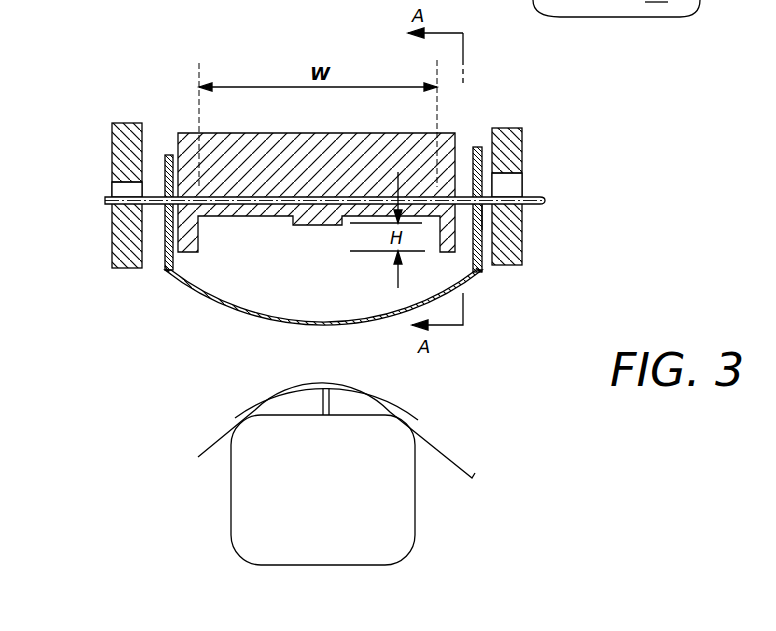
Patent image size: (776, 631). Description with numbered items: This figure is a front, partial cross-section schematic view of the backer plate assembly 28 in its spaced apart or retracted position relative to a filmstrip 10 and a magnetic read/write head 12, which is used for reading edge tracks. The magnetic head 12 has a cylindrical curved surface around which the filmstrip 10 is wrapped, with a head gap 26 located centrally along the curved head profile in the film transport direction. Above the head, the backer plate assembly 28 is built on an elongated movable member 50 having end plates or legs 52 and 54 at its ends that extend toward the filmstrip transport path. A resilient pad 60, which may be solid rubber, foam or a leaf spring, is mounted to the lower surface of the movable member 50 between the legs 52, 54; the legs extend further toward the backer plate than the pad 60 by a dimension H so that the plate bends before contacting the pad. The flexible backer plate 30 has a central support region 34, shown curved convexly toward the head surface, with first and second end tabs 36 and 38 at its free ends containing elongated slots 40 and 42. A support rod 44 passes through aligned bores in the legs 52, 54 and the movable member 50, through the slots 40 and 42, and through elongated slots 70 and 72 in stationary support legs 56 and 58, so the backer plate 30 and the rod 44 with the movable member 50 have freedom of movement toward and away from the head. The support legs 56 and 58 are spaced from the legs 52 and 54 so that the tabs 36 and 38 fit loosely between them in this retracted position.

The filmstrip 10 is at (250, 415).
The magnetic head 12 is at (365, 539).
The head gap 26 is at (322, 395).
The backer plate assembly 28 is at (620, 155).
The backer plate 30 is at (203, 300).
The support region 34 is at (245, 310).
The first end tab 36 is at (168, 150).
The second end tab 38 is at (478, 147).
The elongated slot 40 is at (152, 197).
The elongated slot 42 is at (484, 214).
The support rod 44 is at (547, 201).
The movable member 50 is at (352, 136).
The end plate or leg 52 is at (165, 270).
The end plate or leg 54 is at (468, 272).
The stationary support leg 56 is at (113, 150).
The stationary support leg 58 is at (509, 128).
The resilient pad 60 is at (250, 252).
The elongated slot 70 is at (112, 190).
The elongated slot 72 is at (522, 180).